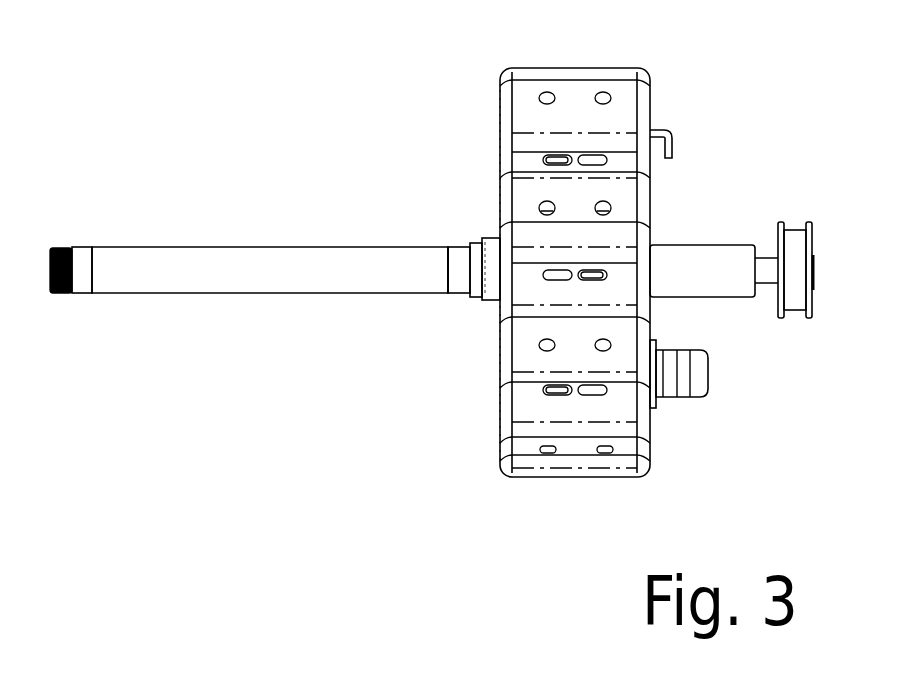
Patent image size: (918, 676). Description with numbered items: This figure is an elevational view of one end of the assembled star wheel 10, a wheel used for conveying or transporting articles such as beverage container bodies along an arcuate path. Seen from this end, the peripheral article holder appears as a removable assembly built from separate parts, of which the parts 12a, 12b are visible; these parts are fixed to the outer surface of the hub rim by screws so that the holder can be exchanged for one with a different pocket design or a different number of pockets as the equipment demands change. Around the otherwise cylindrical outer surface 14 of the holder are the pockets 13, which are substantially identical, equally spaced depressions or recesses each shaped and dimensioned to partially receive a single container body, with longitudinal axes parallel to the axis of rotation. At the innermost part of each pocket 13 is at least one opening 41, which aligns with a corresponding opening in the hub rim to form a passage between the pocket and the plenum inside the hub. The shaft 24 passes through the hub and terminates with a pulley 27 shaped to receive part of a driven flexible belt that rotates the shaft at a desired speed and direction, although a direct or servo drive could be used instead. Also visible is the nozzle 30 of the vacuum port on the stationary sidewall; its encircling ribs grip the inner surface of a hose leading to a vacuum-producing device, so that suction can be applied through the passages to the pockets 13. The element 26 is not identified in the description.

The star wheel 10 is at (368, 143).
The separate part of peripheral article holder 12a is at (500, 110).
The separate part of peripheral article holder 12b is at (516, 362).
The pocket 13 is at (512, 152).
The outer surface of the holder 14 is at (565, 68).
The shaft 24 is at (320, 268).
The hook 26 is at (668, 148).
The pulley 27 is at (795, 222).
The nozzle 30 is at (688, 350).
The opening in the holder 41 is at (598, 178).